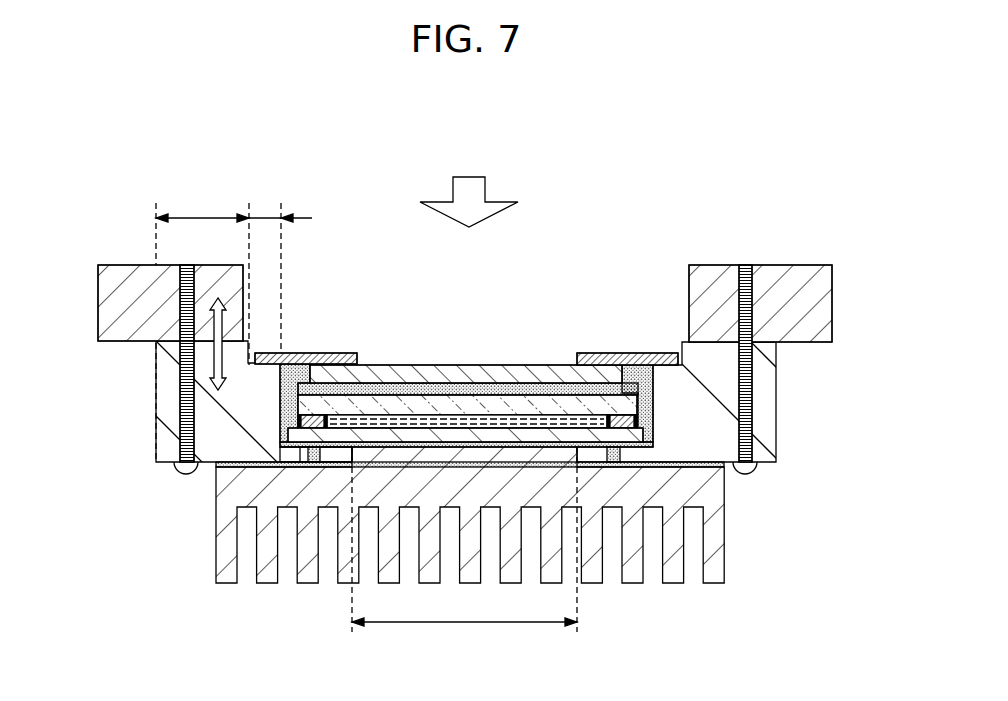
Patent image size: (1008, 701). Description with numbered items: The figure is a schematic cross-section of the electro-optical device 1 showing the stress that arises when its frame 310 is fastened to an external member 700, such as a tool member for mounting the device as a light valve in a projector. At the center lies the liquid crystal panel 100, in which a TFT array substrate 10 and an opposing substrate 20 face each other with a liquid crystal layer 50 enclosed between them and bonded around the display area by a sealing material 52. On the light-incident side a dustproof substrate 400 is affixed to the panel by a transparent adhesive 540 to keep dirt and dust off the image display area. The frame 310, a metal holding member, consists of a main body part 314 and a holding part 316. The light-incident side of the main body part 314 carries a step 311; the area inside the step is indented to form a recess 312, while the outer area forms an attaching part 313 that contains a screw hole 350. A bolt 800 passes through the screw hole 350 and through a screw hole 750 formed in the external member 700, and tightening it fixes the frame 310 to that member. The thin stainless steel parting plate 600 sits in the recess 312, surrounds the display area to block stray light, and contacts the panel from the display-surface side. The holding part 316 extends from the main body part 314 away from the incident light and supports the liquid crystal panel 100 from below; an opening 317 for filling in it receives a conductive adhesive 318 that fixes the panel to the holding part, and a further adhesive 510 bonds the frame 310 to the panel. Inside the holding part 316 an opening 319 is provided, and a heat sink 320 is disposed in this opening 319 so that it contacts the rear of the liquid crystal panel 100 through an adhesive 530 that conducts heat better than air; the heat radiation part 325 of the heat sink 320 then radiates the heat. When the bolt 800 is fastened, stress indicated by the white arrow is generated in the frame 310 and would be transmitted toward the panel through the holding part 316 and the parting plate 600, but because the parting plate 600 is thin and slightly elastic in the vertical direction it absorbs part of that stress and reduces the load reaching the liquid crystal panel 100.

The electro-optical device 1 is at (760, 183).
The TFT array substrate 10 is at (413, 433).
The opposing substrate 20 is at (480, 397).
The liquid crystal layer 50 is at (455, 420).
The sealing material 52 is at (301, 361).
The liquid crystal panel 100 is at (502, 281).
The frame 310 is at (207, 122).
The step 311 is at (250, 343).
The recess 312 is at (263, 218).
The attaching part 313 is at (201, 218).
The main body part 314 is at (283, 163).
The holding part 316 is at (333, 462).
The opening for filling 317 is at (323, 447).
The adhesive 318 is at (297, 447).
The opening 319 is at (464, 549).
The heat sink 320 is at (713, 567).
The heat radiation part 325 is at (599, 602).
The screw hole 350 is at (180, 390).
The dustproof substrate 400 is at (553, 365).
The adhesive 510 is at (640, 353).
The adhesive 530 is at (700, 467).
The transparent adhesive 540 is at (522, 366).
The parting plate 600 is at (612, 367).
The external member 700 is at (125, 270).
The screw hole 750 is at (180, 298).
The bolt 800 is at (178, 474).